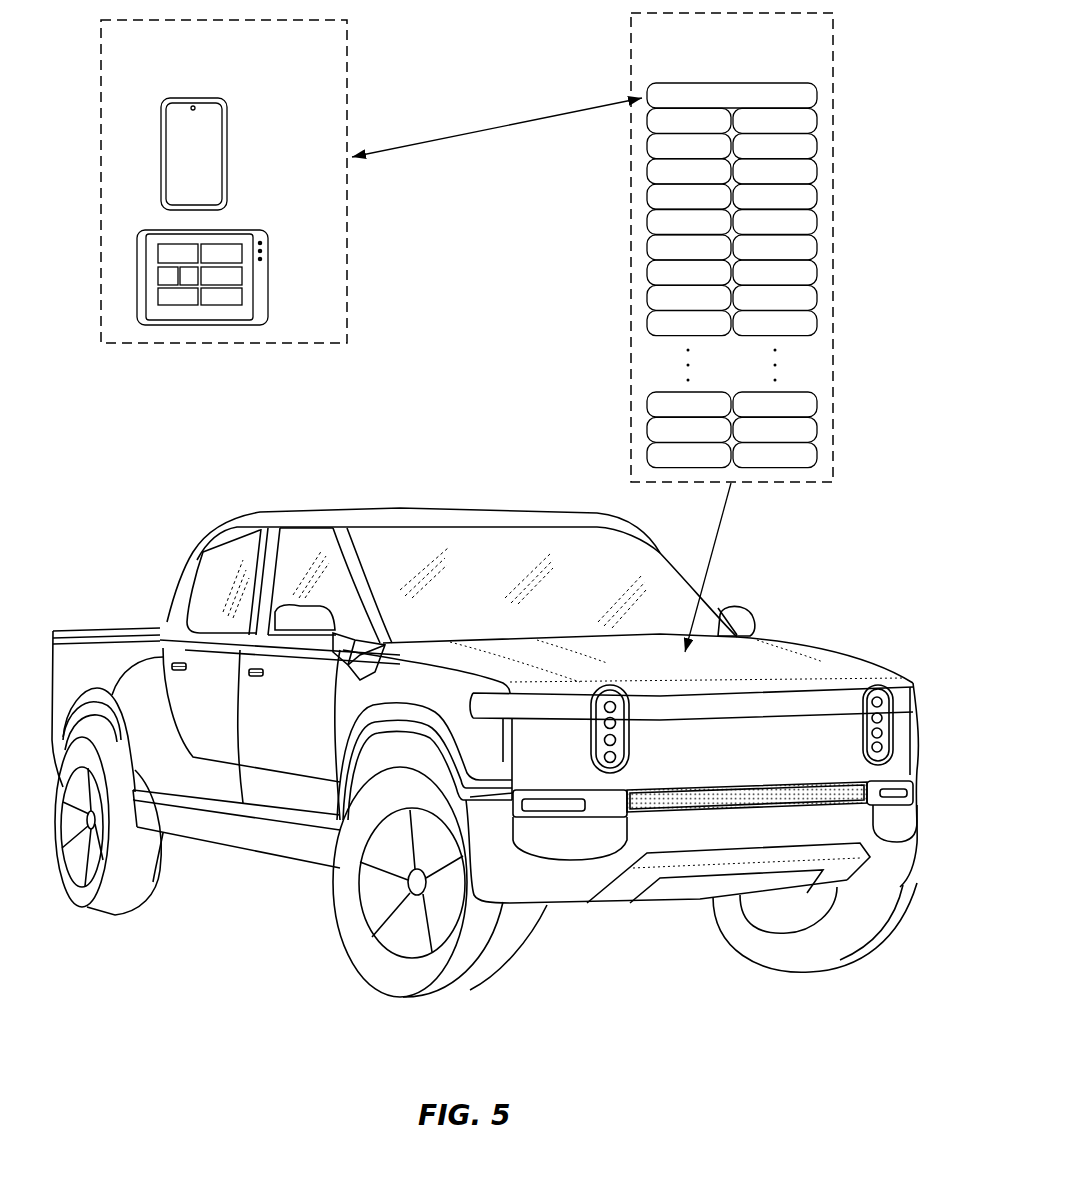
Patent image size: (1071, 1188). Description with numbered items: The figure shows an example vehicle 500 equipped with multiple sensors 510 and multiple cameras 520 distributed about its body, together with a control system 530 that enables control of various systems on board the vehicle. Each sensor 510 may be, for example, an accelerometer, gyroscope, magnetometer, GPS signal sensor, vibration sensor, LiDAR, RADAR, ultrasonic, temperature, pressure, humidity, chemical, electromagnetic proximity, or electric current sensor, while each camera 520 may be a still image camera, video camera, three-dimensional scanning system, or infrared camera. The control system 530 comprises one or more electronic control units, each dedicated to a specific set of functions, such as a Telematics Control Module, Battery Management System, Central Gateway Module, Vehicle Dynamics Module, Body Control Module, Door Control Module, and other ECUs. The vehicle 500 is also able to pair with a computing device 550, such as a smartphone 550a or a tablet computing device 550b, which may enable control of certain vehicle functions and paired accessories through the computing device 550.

The vehicle 500 is at (180, 542).
The sensor 510 is at (53, 747).
The camera 520 is at (766, 763).
The control system 530 is at (756, 64).
The computing device 550 is at (237, 63).
The smartphone 550a is at (228, 153).
The tablet computing device 550b is at (269, 293).